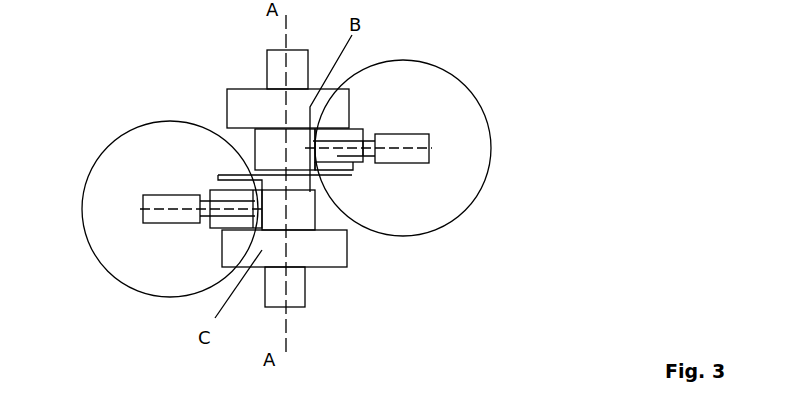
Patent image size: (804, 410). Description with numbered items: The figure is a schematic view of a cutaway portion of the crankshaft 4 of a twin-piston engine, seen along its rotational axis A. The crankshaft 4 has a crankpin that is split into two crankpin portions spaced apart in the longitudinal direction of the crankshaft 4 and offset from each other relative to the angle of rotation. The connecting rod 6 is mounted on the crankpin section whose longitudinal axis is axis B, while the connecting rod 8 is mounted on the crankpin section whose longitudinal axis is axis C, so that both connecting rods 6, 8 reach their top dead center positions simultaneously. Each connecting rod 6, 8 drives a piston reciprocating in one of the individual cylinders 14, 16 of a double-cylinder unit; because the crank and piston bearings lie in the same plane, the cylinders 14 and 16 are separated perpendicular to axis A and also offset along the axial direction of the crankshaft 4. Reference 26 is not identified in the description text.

The crankshaft 4 is at (293, 297).
The connecting rod 6 is at (337, 152).
The connecting rod 8 is at (239, 206).
The individual cylinder 14 is at (425, 103).
The individual cylinder 16 is at (137, 258).
The element 26 is at (173, 405).